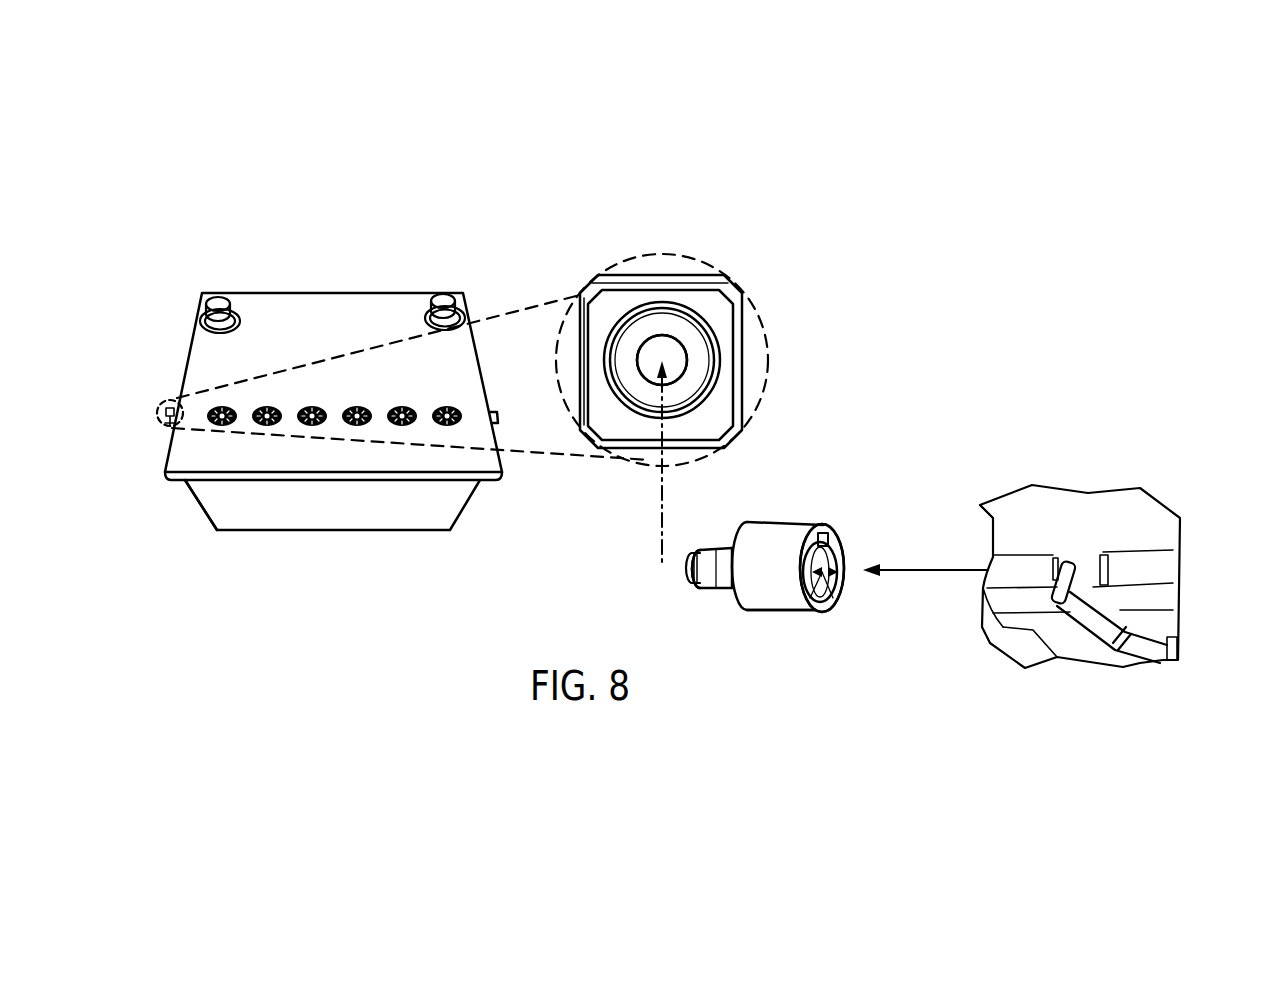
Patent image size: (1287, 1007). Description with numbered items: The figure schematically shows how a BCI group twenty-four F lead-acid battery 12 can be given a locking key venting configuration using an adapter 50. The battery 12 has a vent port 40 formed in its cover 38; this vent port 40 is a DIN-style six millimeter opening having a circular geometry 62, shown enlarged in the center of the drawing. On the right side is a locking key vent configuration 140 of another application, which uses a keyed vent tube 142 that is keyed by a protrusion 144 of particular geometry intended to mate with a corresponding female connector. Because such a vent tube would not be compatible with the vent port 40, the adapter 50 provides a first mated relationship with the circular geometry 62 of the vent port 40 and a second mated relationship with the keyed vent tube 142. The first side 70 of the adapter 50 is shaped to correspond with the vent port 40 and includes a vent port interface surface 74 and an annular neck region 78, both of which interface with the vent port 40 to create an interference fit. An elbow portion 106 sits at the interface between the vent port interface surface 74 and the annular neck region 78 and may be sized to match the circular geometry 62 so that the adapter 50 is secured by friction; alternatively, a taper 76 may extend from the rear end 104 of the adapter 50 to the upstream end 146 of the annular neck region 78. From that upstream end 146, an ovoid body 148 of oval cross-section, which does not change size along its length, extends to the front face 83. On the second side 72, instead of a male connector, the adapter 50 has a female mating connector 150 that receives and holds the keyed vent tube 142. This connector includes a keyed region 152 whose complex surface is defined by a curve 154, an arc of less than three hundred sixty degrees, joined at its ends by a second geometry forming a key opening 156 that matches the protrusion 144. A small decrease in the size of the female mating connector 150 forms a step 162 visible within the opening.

The battery 12 is at (326, 280).
The cover 38 is at (175, 463).
The vent port 40 is at (170, 405).
The circular geometry 62 is at (647, 378).
The first side 70 is at (708, 532).
The upstream end 146 is at (727, 532).
The adapter 50 is at (765, 515).
The key opening 156 is at (825, 533).
The second side 72 is at (852, 520).
The front face 83 is at (843, 553).
The keyed region 152 is at (847, 577).
The female mating connector 150 is at (840, 577).
The curve 154 is at (830, 583).
The step 162 is at (830, 593).
The ovoid body 148 is at (787, 613).
The annular neck region 78 is at (717, 590).
The vent port interface surface 74 is at (697, 589).
The rear end 104 is at (690, 572).
The taper 76 is at (688, 563).
The elbow portion 106 is at (700, 553).
The protrusion 144 is at (1086, 558).
The locking key vent configuration 140 is at (1110, 562).
The keyed vent tube 142 is at (1173, 603).